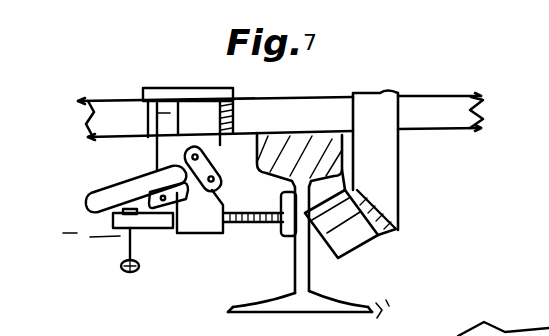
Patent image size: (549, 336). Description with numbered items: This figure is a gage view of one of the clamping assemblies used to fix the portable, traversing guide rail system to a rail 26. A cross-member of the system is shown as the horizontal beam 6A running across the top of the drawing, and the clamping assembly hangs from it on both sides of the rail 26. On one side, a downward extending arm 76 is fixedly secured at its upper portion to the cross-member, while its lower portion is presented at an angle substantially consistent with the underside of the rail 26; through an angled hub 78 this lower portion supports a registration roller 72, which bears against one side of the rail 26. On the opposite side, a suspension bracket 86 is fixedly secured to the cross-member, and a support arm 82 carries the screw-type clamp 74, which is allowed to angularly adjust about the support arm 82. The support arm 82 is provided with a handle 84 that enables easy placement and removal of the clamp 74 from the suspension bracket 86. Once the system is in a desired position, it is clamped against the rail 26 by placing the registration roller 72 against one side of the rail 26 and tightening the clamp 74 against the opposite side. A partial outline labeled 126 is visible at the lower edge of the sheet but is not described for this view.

The transverse beam 6A is at (435, 112).
The support arm 82 is at (197, 100).
The suspension bracket 86 is at (147, 108).
The rail 26 is at (315, 136).
The downward extending arm 76 is at (383, 160).
The angled hub 78 is at (373, 227).
The registration roller 72 is at (353, 234).
The handle 84 is at (88, 200).
The clamp 74 is at (158, 228).
The frame member 126 is at (486, 326).